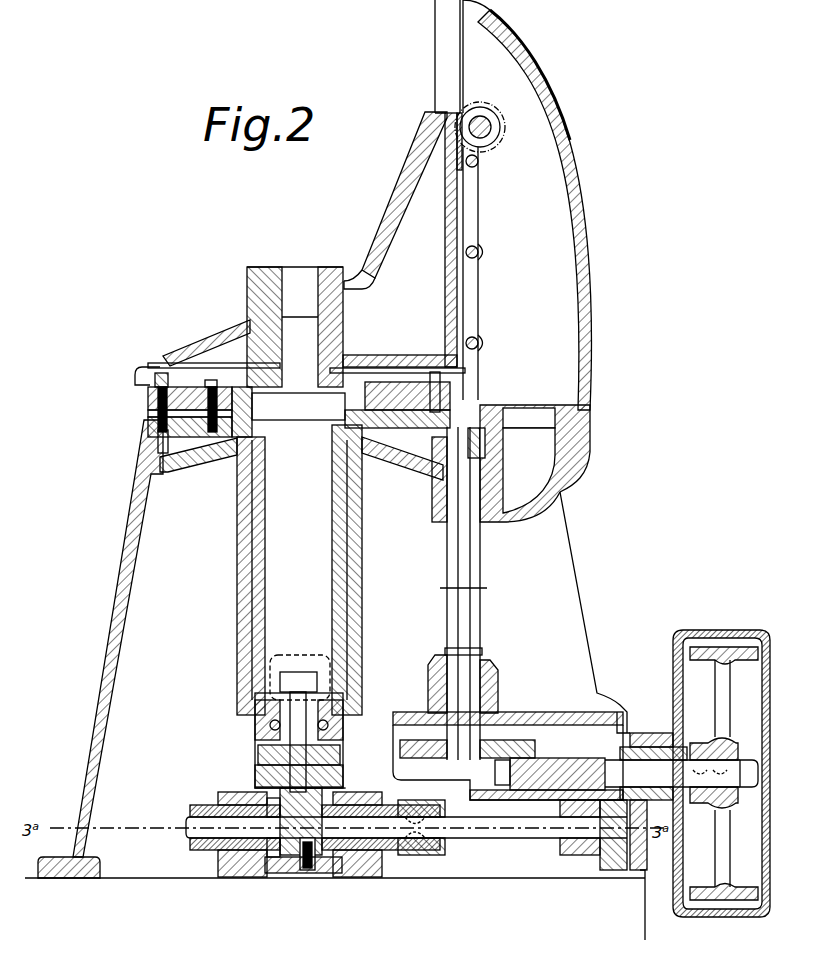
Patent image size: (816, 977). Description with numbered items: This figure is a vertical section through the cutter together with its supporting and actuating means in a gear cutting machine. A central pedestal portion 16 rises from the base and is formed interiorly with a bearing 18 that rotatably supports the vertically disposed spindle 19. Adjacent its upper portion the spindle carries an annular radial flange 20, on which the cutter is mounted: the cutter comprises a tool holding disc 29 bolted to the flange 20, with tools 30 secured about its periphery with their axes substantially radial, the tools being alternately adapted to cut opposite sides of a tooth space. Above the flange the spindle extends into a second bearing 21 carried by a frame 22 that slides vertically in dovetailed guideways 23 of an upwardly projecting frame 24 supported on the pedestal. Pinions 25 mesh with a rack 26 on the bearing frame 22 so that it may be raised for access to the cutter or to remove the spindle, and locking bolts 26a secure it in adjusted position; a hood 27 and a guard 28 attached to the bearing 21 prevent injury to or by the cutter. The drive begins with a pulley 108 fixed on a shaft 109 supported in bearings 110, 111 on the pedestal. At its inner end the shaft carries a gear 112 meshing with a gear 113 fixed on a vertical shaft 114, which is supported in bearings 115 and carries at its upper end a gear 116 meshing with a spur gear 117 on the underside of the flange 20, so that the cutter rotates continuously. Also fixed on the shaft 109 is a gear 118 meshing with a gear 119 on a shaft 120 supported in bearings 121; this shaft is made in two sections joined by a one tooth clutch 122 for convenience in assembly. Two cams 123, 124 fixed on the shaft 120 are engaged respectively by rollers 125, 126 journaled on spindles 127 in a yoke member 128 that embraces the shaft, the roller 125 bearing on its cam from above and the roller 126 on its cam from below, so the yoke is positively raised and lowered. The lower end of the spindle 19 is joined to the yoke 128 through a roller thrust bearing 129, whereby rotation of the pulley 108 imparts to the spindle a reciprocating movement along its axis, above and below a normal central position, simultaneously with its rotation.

The central pedestal portion 16 is at (128, 526).
The bearing 18 is at (240, 512).
The spindle 19 is at (252, 548).
The annular radial flange 20 is at (148, 422).
The second bearing 21 is at (247, 285).
The frame 22 is at (425, 121).
The dovetailed guideways 23 is at (435, 61).
The upwardly projecting frame 24 is at (573, 158).
The pinions 25 is at (490, 108).
The rack 26 is at (455, 115).
The locking bolts 26a is at (478, 252).
The hood 27 is at (212, 332).
The guard 28 is at (148, 368).
The tool holding disc 29 is at (148, 400).
The tools 30 is at (150, 380).
The pulley 108 is at (722, 647).
The shaft 109 is at (663, 731).
The bearing 110 is at (636, 736).
The bearing 111 is at (565, 838).
The gear 112 is at (528, 770).
The gear 113 is at (505, 740).
The vertical shaft 114 is at (482, 632).
The bearings 115 is at (432, 500).
The gear 116 is at (483, 445).
The spur gear 117 is at (412, 458).
The gear 118 is at (625, 775).
The gear 119 is at (612, 870).
The shaft 120 is at (590, 857).
The bearings 121 is at (238, 860).
The one tooth clutch 122 is at (422, 855).
The cam 123 is at (275, 860).
The cam 124 is at (308, 872).
The roller 125 is at (258, 785).
The roller 126 is at (320, 858).
The spindles 127 is at (322, 790).
The yoke member 128 is at (258, 765).
The roller thrust bearing 129 is at (258, 750).